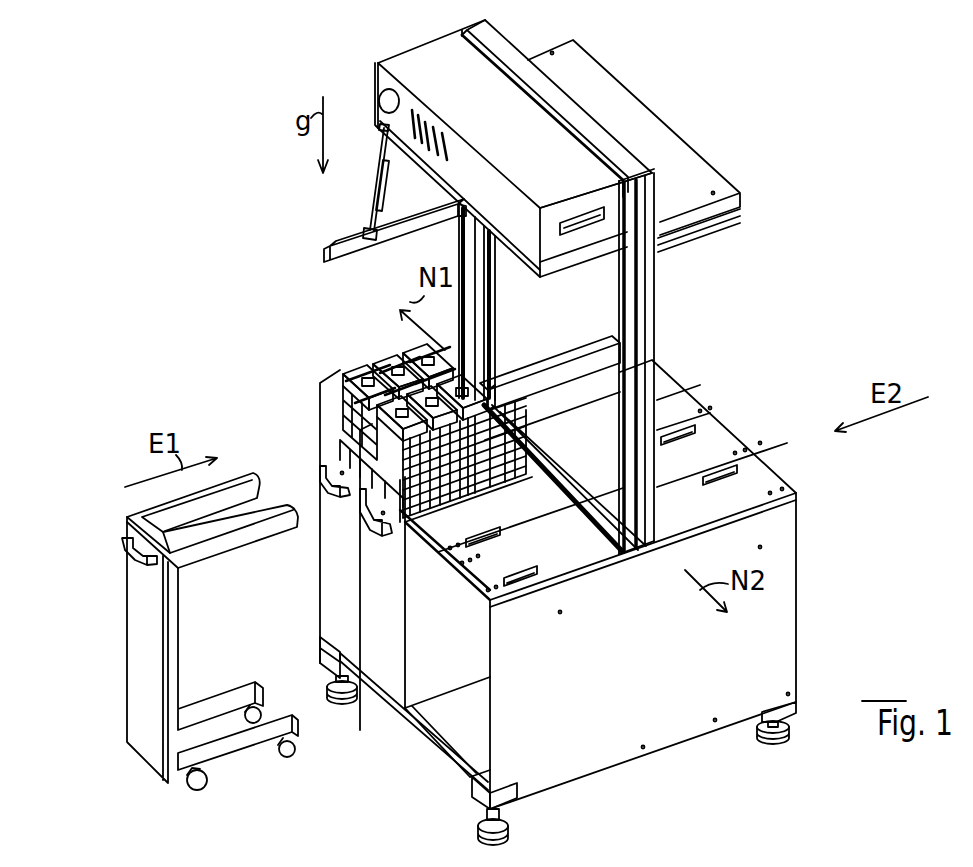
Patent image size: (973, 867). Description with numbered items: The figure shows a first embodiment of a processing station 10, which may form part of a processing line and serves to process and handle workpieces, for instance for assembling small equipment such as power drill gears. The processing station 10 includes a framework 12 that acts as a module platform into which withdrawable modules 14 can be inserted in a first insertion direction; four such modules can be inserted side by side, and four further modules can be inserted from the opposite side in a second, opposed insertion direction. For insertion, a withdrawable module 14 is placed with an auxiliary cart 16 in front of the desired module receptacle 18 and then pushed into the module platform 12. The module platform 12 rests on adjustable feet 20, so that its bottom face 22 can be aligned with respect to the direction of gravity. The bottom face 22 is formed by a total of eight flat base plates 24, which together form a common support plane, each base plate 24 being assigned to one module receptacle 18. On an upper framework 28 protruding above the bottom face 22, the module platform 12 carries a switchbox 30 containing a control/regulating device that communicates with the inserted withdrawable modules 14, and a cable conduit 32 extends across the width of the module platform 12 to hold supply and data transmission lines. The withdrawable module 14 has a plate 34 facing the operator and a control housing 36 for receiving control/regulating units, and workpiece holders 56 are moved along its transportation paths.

The processing station 10 is at (847, 197).
The framework 12 is at (641, 288).
The withdrawable module 14 is at (327, 423).
The auxiliary cart 16 is at (132, 649).
The module receptacle 18 is at (428, 729).
The adjustable feet 20 is at (327, 690).
The bottom face 22 is at (725, 430).
The base plate 24 is at (770, 483).
The upper framework 28 is at (643, 333).
The switchbox 30 is at (519, 146).
The cable conduit 32 is at (583, 123).
The plate 34 is at (327, 505).
The control housing 36 is at (452, 637).
The workpiece holder 56 is at (425, 370).